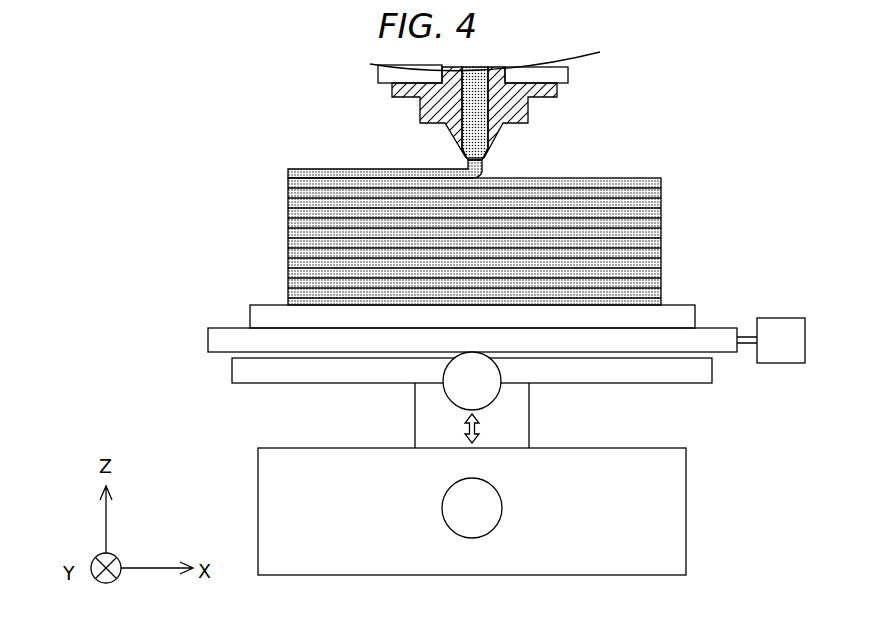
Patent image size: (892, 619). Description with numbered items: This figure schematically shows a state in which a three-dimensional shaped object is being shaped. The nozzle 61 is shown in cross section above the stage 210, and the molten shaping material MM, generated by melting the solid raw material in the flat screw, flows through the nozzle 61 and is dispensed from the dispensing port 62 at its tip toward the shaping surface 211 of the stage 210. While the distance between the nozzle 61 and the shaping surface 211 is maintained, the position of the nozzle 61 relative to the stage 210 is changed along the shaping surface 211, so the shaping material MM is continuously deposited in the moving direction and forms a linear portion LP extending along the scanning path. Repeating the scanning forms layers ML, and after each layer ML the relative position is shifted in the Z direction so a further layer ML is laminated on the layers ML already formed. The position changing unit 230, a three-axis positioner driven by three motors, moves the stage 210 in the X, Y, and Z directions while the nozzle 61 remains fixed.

The nozzle 61 is at (400, 117).
The dispensing port 62 is at (463, 162).
The shaping material MM is at (480, 102).
The linear portion LP is at (318, 169).
The layer ML is at (288, 234).
The shaping surface 211 is at (677, 318).
The stage 210 is at (682, 306).
The position changing unit 230 is at (728, 440).